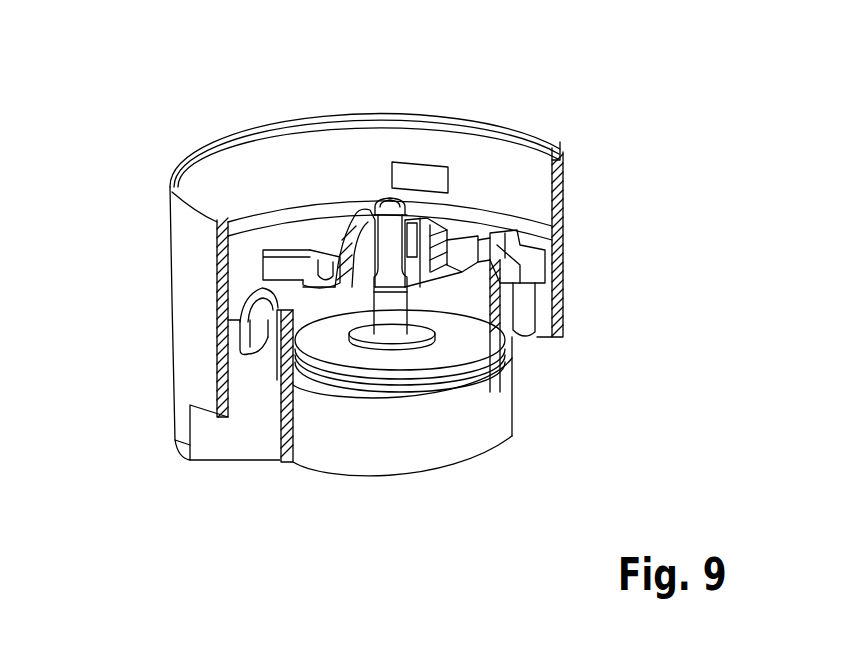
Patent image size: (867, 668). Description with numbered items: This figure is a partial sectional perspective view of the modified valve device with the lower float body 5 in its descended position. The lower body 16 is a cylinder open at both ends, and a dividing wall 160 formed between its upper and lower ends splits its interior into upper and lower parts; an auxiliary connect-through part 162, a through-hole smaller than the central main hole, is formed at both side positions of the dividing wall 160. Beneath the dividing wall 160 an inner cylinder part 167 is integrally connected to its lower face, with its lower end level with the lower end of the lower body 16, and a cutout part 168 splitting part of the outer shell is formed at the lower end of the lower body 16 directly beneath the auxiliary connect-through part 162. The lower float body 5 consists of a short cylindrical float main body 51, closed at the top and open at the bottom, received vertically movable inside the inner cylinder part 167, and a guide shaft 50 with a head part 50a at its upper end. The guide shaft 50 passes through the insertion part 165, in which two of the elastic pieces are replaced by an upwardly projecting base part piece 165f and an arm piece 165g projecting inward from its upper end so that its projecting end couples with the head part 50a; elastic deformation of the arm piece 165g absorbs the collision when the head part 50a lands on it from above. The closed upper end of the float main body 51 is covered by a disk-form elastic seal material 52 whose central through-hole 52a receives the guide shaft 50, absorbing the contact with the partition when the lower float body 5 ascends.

The lower float body 5 is at (445, 433).
The lower body 16 is at (175, 396).
The guide shaft 50 is at (479, 200).
The head part 50a is at (390, 197).
The float main body 51 is at (450, 443).
The elastic seal material 52 is at (392, 360).
The through-hole 52a is at (440, 340).
The dividing wall 160 is at (230, 264).
The auxiliary connect-through part 162 is at (233, 367).
The insertion part 165 is at (338, 285).
The base part piece 165f is at (307, 250).
The arm piece 165g is at (355, 210).
The inner cylinder part 167 is at (278, 430).
The cutout part 168 is at (178, 444).